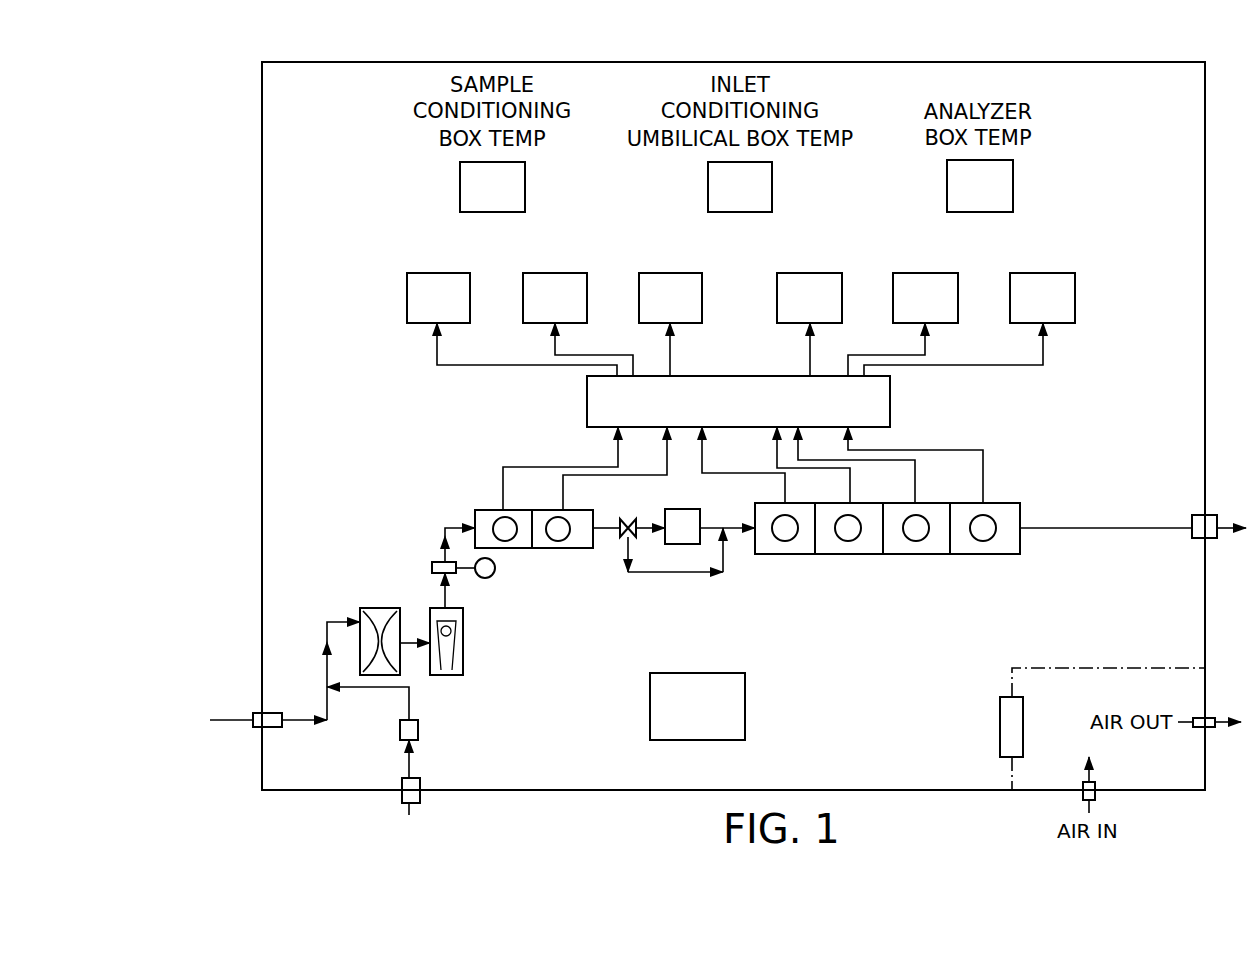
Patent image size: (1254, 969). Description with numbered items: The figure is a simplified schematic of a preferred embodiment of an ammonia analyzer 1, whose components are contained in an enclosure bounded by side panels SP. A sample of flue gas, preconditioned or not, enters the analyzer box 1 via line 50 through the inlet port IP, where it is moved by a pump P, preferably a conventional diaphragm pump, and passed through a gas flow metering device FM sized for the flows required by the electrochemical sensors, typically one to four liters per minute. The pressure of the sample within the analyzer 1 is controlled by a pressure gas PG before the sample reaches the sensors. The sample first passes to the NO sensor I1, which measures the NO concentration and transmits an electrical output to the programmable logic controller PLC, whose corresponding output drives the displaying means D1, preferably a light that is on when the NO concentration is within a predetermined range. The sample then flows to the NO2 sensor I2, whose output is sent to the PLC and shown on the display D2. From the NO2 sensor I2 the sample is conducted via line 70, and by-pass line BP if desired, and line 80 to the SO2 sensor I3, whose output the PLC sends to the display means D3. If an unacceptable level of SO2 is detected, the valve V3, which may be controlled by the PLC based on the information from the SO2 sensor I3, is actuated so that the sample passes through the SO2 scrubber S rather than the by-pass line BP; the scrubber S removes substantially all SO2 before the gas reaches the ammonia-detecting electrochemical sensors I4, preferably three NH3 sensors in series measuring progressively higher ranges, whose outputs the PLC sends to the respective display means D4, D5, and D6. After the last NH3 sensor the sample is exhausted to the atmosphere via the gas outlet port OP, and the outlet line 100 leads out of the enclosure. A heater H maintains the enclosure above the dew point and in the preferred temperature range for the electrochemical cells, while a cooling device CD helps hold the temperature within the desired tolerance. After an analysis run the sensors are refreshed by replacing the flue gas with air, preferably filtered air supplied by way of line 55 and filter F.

The ammonia analyzer 1 is at (291, 49).
The line 50 is at (229, 722).
The line 55 is at (418, 770).
The line 70 is at (611, 536).
The line 80 is at (708, 521).
The outlet line 100 is at (1128, 577).
The side panel SP is at (262, 215).
The inlet port IP is at (283, 713).
The gas outlet port OP is at (1197, 515).
The pump P is at (372, 608).
The gas flow metering device FM is at (463, 631).
The pressure gas PG is at (432, 570).
The filter F is at (418, 731).
The valve V3 is at (628, 517).
The SO2 scrubber S is at (682, 526).
The by-pass line BP is at (668, 574).
The NO sensor I1 is at (490, 510).
The NO2 sensor I2 is at (548, 548).
The SO2 sensor I3 is at (794, 556).
The NH3 sensors I4 is at (1020, 562).
The displaying means D1 is at (438, 281).
The display D2 is at (555, 281).
The display means D3 is at (670, 281).
The display means D4 is at (809, 281).
The display means D5 is at (925, 281).
The display means D6 is at (1042, 281).
The programmable logic controller PLC is at (738, 401).
The heater H is at (697, 706).
The cooling device CD is at (1109, 667).